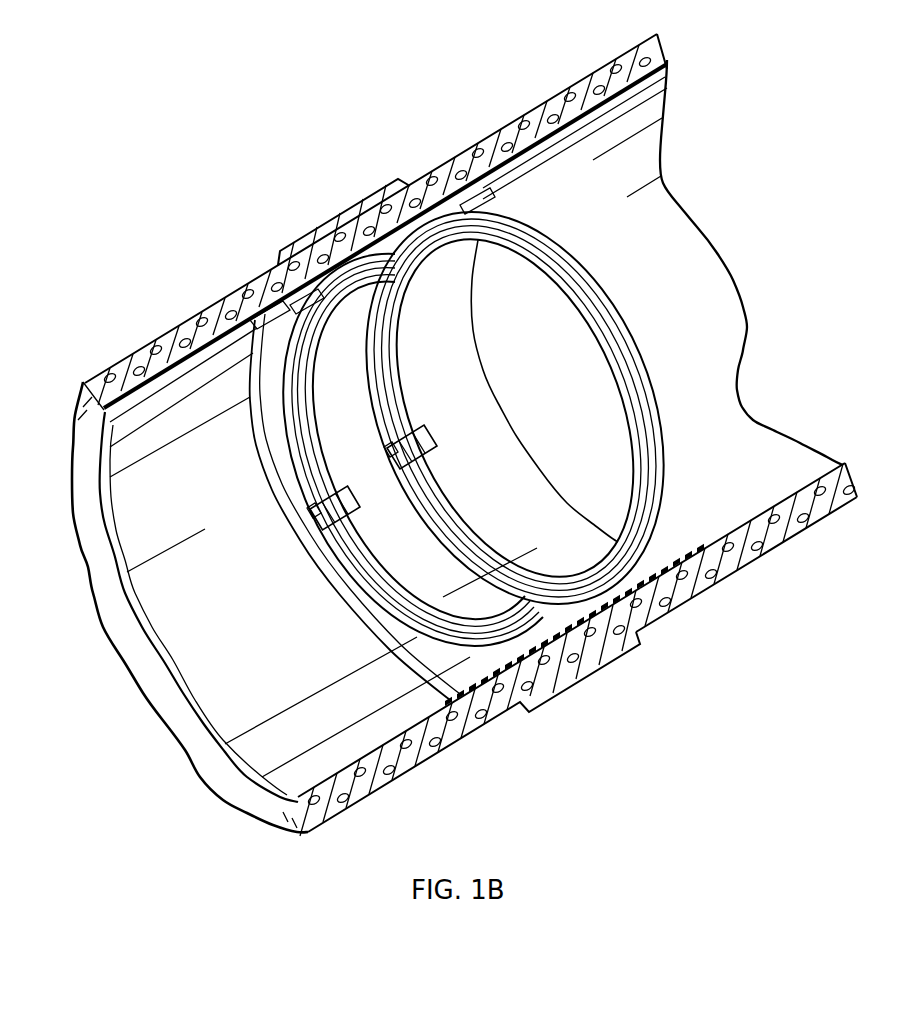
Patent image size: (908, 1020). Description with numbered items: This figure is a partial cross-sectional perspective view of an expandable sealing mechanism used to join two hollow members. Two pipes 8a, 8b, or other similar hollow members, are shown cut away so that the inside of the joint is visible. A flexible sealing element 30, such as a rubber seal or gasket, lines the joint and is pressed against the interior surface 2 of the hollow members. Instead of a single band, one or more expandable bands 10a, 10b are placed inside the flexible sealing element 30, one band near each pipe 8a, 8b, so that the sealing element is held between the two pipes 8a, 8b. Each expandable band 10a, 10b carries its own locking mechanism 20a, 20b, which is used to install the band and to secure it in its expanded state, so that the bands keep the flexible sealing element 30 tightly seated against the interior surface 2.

The interior surface 2 is at (693, 521).
The pipe 8a is at (426, 749).
The pipe 8b is at (787, 541).
The flexible sealing element 30 is at (487, 196).
The expandable band 10a is at (617, 316).
The expandable band 10b is at (382, 611).
The locking mechanism 20a is at (446, 431).
The locking mechanism 20b is at (294, 526).